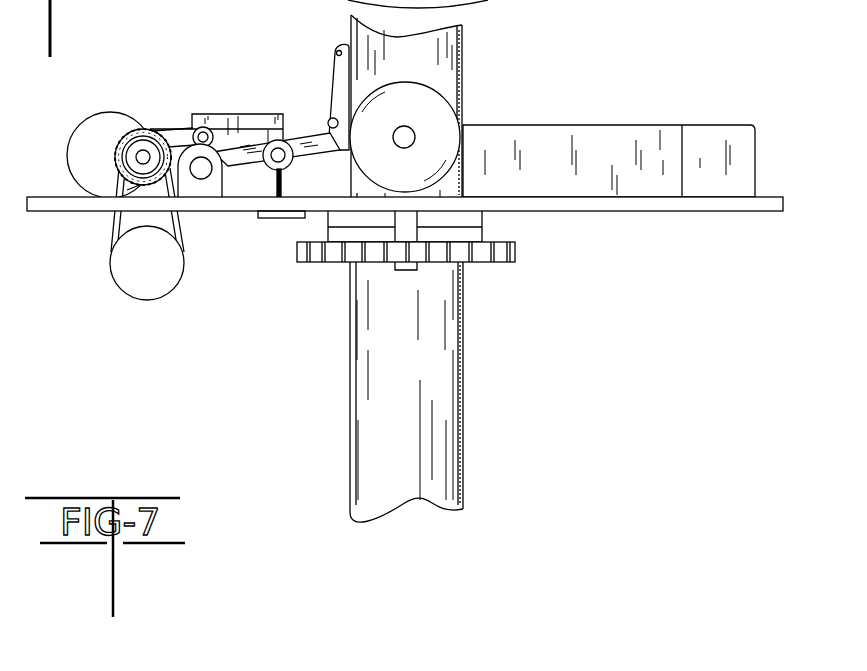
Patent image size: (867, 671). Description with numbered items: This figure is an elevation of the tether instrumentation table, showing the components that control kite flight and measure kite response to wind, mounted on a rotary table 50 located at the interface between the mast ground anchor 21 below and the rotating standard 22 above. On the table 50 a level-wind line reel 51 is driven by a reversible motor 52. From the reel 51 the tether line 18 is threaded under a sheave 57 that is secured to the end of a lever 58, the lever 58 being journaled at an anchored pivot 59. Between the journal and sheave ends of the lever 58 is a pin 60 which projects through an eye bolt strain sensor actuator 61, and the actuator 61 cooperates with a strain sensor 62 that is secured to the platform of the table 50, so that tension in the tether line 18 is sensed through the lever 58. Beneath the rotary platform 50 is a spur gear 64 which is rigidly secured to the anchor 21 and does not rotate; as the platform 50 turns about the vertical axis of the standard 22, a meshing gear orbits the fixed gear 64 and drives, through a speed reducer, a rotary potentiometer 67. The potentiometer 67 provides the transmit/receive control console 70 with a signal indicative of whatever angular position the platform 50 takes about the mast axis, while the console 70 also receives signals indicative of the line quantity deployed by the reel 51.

The tether line 18 is at (334, 82).
The mast ground anchor 21 is at (406, 445).
The rotating standard 22 is at (406, 71).
The rotary table 50 is at (641, 201).
The level-wind line reel 51 is at (99, 165).
The reversible motor 52 is at (158, 280).
The sheave 57 is at (331, 119).
The lever 58 is at (250, 166).
The anchored pivot 59 is at (203, 180).
The pin 60 is at (291, 170).
The eye bolt strain sensor actuator 61 is at (279, 184).
The strain sensor 62 is at (288, 219).
The spur gear 64 is at (497, 260).
The rotary potentiometer 67 is at (449, 150).
The transmit/receive control console 70 is at (558, 188).